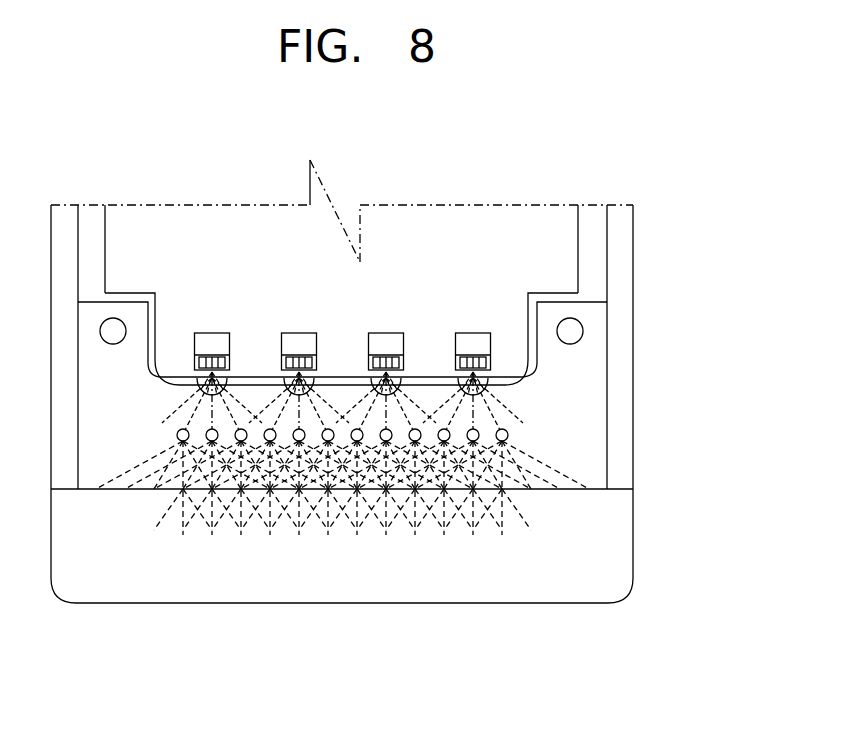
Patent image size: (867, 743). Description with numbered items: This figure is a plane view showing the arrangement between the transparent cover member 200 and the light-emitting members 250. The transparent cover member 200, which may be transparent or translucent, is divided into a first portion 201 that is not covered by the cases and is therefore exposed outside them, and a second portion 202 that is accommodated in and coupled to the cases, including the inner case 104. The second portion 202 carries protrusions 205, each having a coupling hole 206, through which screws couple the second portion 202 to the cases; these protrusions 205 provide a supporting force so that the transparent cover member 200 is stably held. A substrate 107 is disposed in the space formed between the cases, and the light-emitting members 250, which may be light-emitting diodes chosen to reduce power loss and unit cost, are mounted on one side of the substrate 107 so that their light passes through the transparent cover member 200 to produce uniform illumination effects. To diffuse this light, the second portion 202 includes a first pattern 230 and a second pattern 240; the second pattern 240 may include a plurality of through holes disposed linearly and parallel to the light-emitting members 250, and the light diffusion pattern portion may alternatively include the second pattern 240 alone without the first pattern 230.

The inner case 104 is at (625, 251).
The substrate 107 is at (273, 220).
The transparent cover member 200 is at (405, 452).
The first portion 201 is at (381, 546).
The second portion 202 is at (590, 457).
The protrusion 205 is at (598, 312).
The coupling hole 206 is at (583, 331).
The first pattern 230 is at (486, 388).
The second pattern 240 is at (507, 434).
The light-emitting member 250 is at (212, 370).